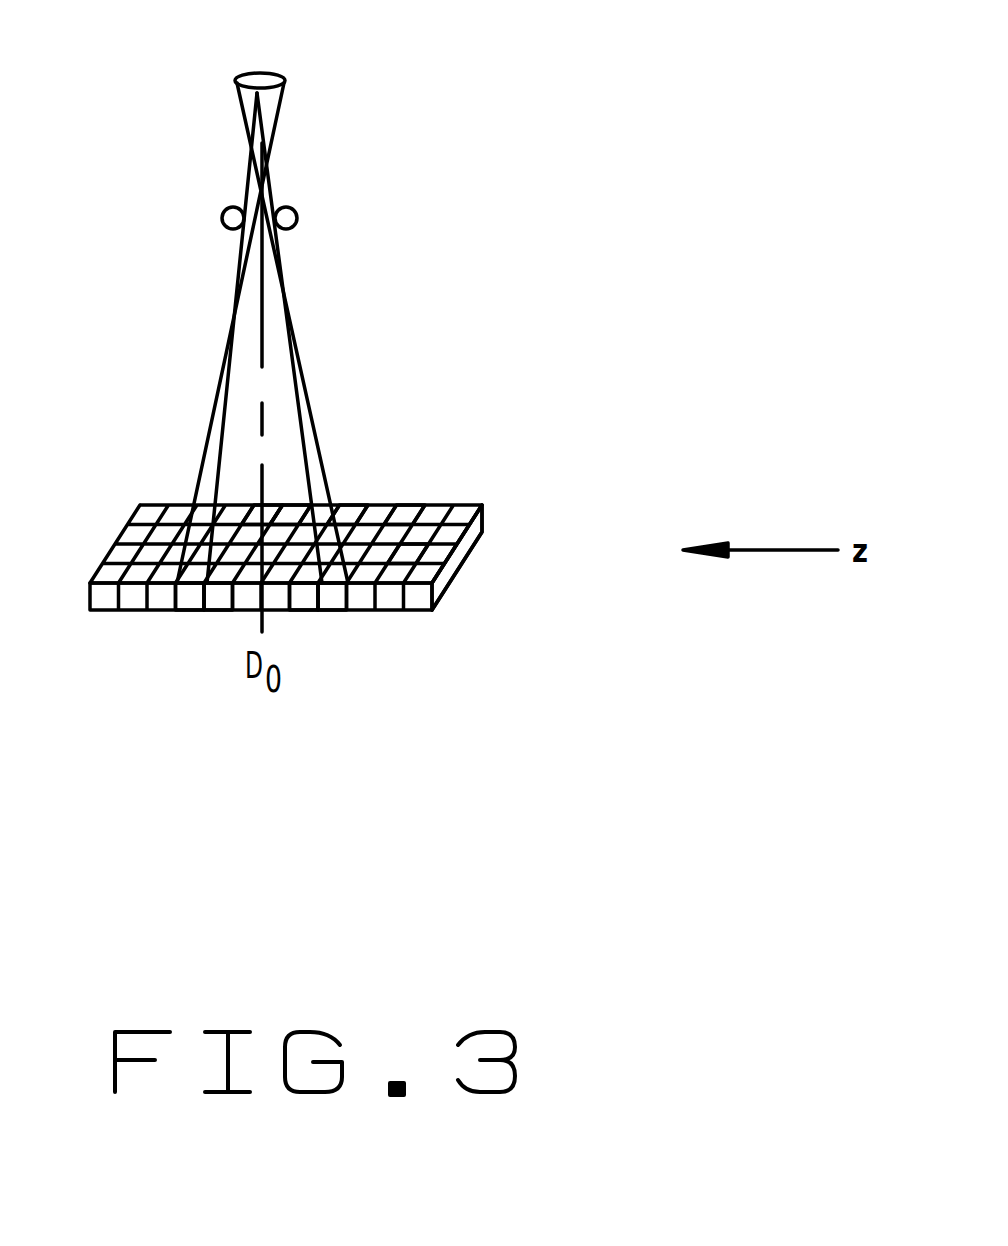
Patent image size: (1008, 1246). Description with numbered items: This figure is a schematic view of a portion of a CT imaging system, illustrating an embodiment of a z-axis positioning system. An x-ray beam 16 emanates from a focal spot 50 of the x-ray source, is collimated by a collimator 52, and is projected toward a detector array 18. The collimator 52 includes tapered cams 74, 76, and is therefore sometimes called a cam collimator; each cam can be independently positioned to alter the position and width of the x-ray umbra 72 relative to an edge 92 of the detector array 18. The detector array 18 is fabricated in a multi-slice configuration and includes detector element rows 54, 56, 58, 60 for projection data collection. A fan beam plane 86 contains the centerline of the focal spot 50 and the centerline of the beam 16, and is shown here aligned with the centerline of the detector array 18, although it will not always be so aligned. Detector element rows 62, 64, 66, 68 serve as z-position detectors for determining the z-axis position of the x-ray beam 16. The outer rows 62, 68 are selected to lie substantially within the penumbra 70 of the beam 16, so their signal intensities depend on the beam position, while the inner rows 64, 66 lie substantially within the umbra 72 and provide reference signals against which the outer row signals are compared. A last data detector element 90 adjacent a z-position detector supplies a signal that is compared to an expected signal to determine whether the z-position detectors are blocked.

The focal spot 50 is at (262, 72).
The x-ray beam 16 is at (253, 163).
The collimator 52 is at (287, 204).
The tapered cam 74 is at (223, 217).
The tapered cam 76 is at (297, 218).
The fan beam plane 86 is at (250, 313).
The penumbra 70 is at (215, 472).
The umbra 72 is at (287, 407).
The detector element row 54 is at (265, 503).
The detector element row 56 is at (300, 503).
The detector element row 58 is at (363, 505).
The detector element row 60 is at (417, 505).
The edge of detector array 92 is at (478, 540).
The last data detector element 90 is at (412, 558).
The outer detector element row 62 is at (188, 598).
The inner detector element row 64 is at (220, 598).
The inner detector element row 66 is at (306, 598).
The outer detector element row 68 is at (336, 598).
The detector array 18 is at (210, 780).